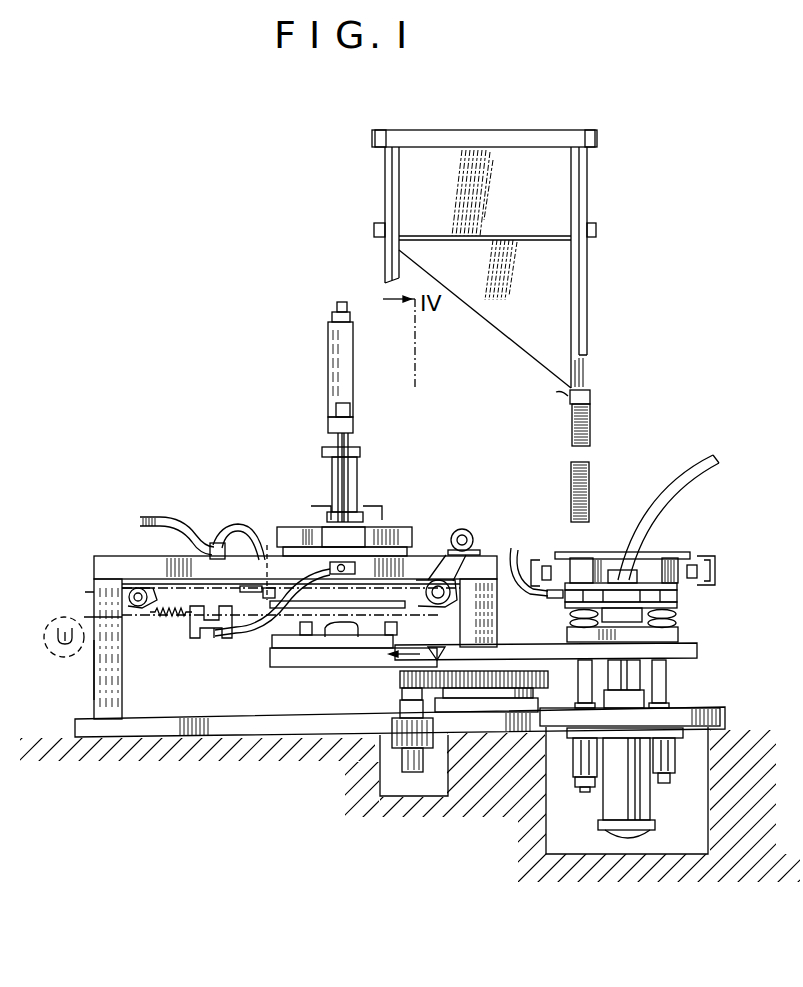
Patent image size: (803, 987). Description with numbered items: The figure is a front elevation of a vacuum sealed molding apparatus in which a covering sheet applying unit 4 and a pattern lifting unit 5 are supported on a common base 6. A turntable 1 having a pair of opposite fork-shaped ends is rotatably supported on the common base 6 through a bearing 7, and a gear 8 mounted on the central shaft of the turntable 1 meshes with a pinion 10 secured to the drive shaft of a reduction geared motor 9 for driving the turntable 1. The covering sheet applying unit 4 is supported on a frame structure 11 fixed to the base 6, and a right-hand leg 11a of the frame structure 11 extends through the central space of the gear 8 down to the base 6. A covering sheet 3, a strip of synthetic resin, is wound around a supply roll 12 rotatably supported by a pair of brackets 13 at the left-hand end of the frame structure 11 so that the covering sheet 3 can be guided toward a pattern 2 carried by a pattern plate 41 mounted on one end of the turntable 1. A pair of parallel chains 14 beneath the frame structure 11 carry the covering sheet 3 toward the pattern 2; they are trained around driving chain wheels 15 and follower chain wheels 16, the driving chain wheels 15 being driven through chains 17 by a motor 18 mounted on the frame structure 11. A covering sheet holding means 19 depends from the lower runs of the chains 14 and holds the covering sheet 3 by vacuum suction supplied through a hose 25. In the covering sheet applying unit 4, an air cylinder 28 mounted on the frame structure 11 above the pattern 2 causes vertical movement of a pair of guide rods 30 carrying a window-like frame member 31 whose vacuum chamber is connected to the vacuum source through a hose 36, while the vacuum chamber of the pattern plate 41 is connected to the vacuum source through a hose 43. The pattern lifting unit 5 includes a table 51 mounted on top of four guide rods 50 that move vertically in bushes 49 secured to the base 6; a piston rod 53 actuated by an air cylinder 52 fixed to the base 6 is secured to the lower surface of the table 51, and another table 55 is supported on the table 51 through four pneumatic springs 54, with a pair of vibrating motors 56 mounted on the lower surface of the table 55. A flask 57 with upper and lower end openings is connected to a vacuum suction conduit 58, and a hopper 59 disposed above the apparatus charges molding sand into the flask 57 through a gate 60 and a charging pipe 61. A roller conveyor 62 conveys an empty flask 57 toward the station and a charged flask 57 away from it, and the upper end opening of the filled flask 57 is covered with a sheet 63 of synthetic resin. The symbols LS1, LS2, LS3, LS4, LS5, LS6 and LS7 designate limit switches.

The turntable 1 is at (272, 663).
The pattern 2 is at (330, 650).
The covering sheet 3 is at (86, 613).
The covering sheet applying unit 4 is at (297, 530).
The pattern lifting unit 5 is at (581, 570).
The common base 6 is at (76, 731).
The bearing 7 is at (493, 706).
The gear 8 is at (512, 660).
The reduction geared motor 9 is at (410, 770).
The pinion 10 is at (402, 676).
The frame structure 11 is at (310, 623).
The right-hand leg 11a is at (478, 596).
The supply roll 12 is at (46, 634).
The brackets 13 is at (94, 671).
The chains 14 is at (157, 615).
The driving chain wheels 15 is at (361, 544).
The follower chain wheels 16 is at (124, 597).
The chains 17 is at (440, 580).
The motor 18 is at (468, 530).
The covering sheet holding means 19 is at (204, 640).
The hose 25 is at (245, 636).
The air cylinder 28 is at (333, 494).
The guide rods 30 is at (338, 447).
The frame member 31 is at (263, 595).
The hose 36 is at (236, 524).
The pattern plate 41 is at (355, 655).
The hose 43 is at (512, 547).
The bushes 49 is at (670, 748).
The guide rods 50 is at (672, 694).
The table 51 is at (680, 637).
The air cylinder 52 is at (645, 812).
The piston rod 53 is at (664, 686).
The pneumatic springs 54 is at (680, 622).
The table 55 is at (677, 606).
The vibrating motors 56 is at (630, 623).
The flask 57 is at (690, 557).
The vacuum suction conduit 58 is at (706, 456).
The hopper 59 is at (487, 150).
The gate 60 is at (592, 396).
The charging pipe 61 is at (592, 440).
The roller conveyor 62 is at (716, 572).
The sheet 63 is at (666, 552).
The limit switch LS1 is at (558, 699).
The limit switch LS2 is at (377, 469).
The limit switch LS3 is at (377, 495).
The limit switch LS4 is at (377, 406).
The limit switch LS5 is at (436, 633).
The limit switch LS6 is at (171, 641).
The limit switch LS7 is at (561, 765).